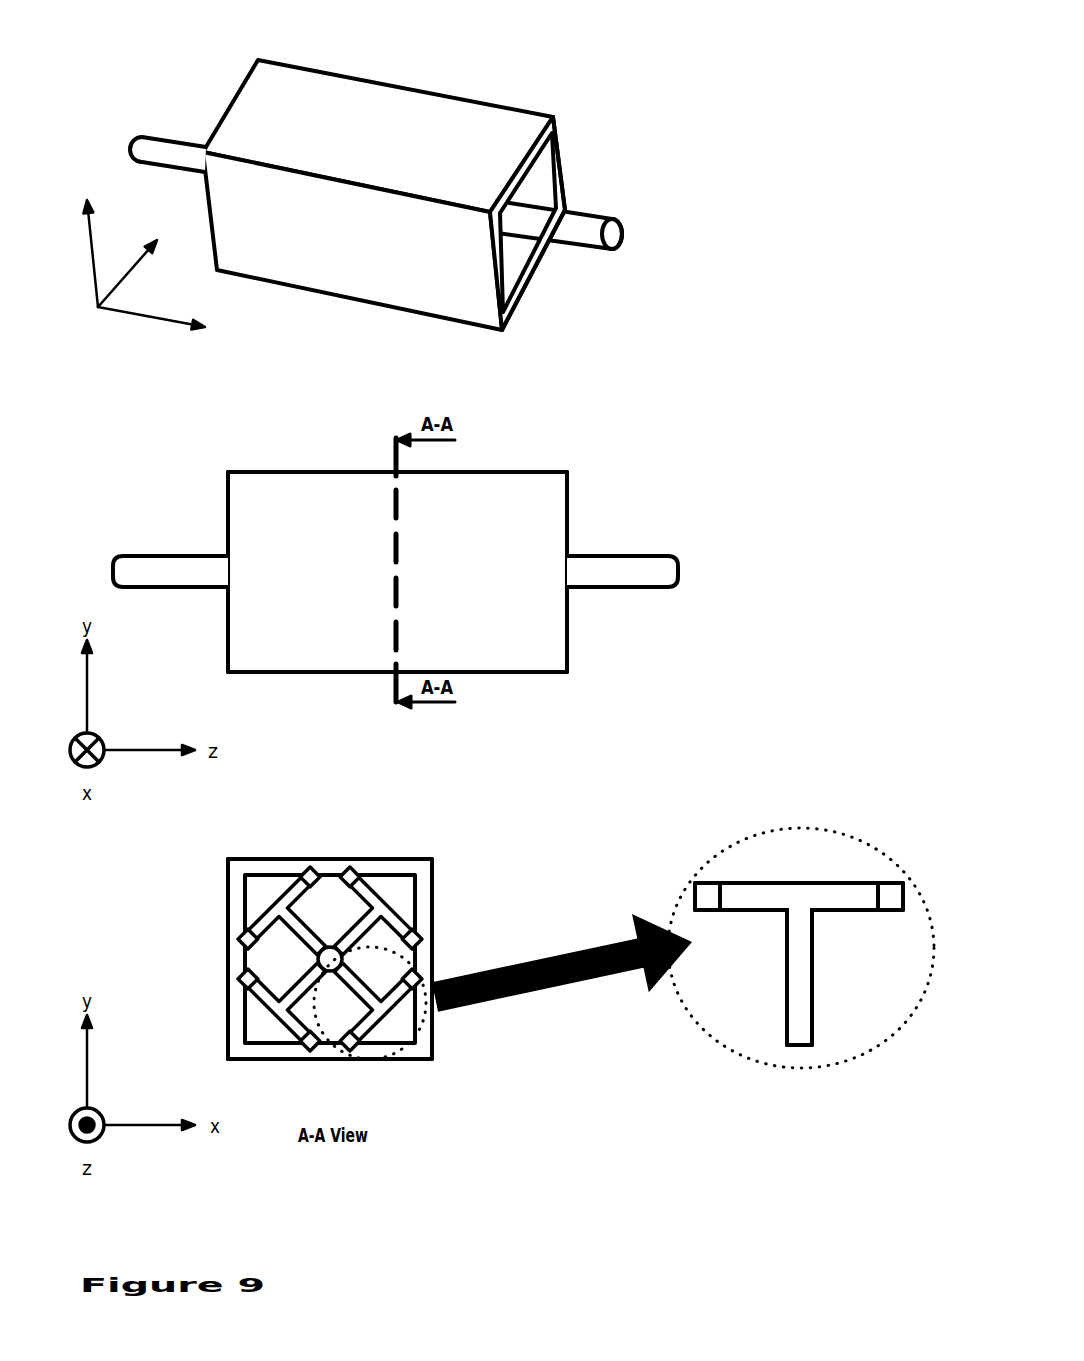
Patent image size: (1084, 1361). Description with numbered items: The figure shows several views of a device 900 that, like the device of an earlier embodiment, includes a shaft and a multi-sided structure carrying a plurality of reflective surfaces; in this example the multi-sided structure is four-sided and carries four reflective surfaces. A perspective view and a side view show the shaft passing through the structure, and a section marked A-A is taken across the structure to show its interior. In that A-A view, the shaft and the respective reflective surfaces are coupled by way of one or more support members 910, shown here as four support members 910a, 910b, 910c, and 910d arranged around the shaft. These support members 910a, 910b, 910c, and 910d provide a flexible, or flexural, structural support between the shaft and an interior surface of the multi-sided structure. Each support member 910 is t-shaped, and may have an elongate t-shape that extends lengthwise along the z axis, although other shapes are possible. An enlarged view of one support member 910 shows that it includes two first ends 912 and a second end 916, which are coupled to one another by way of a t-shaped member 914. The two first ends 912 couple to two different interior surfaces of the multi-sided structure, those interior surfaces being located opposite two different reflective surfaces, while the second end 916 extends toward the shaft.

The device 900 is at (865, 92).
The support member 910 is at (768, 813).
The support member 910a is at (257, 922).
The support member 910b is at (290, 1028).
The support member 910c is at (387, 1010).
The support member 910d is at (410, 920).
The first end 912 is at (893, 883).
The t-shaped member 914 is at (785, 1012).
The second end 916 is at (797, 1047).